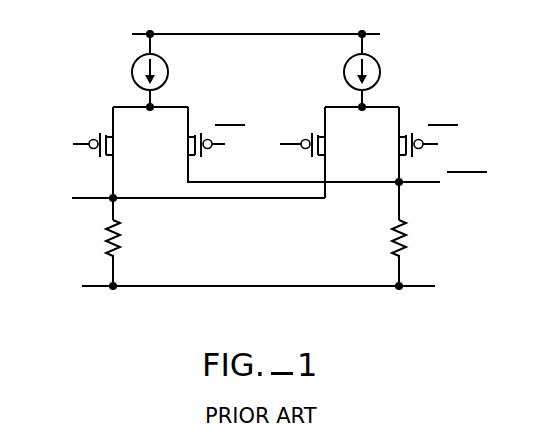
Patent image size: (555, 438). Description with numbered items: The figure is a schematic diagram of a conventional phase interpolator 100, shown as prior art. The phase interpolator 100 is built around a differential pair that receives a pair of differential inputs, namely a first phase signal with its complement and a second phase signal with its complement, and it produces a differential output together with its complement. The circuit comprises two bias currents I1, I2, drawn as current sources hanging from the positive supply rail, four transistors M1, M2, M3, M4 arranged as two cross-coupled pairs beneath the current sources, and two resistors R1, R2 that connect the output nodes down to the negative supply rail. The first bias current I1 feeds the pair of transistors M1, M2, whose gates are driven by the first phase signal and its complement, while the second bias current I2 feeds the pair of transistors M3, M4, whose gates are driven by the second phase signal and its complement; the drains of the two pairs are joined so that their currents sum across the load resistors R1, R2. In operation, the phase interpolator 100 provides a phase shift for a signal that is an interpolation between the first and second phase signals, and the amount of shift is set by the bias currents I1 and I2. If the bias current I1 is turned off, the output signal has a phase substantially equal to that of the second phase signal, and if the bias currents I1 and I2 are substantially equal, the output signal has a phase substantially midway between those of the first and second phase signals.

The phase interpolator 100 is at (278, 163).
The bias current I1 is at (162, 70).
The bias current I2 is at (351, 70).
The transistor M1 is at (112, 145).
The transistor M2 is at (188, 145).
The transistor M3 is at (323, 145).
The transistor M4 is at (400, 145).
The resistor R1 is at (128, 238).
The resistor R2 is at (386, 238).